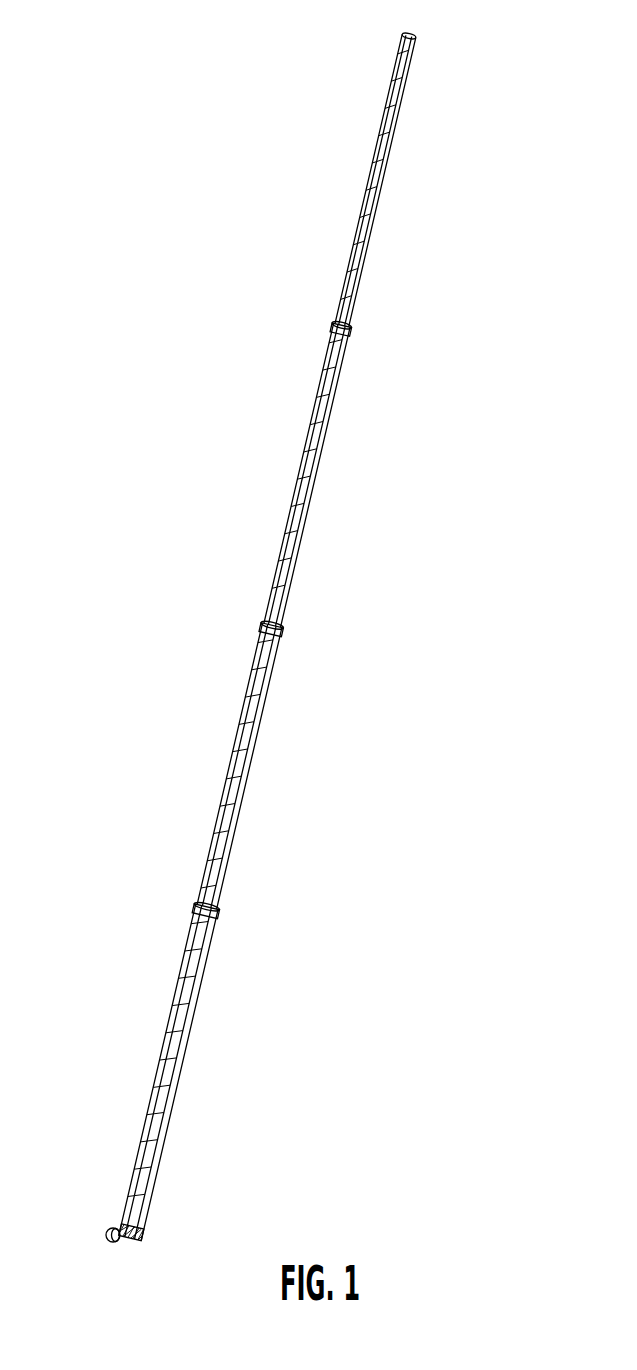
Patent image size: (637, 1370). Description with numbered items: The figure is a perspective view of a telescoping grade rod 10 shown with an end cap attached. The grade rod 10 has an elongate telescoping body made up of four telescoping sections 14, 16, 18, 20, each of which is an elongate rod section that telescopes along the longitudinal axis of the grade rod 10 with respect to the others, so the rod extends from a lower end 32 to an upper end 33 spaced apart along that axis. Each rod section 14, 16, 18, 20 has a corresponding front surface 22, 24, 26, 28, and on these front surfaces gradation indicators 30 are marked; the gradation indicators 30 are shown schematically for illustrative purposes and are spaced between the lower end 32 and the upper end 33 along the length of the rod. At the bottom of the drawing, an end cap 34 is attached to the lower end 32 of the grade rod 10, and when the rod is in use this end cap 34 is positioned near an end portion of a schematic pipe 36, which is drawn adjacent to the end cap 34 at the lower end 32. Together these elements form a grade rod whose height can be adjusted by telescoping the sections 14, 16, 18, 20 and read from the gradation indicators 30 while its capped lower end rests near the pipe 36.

The telescoping grade rod 10 is at (280, 142).
The telescoping section 14 is at (166, 1109).
The telescoping section 16 is at (243, 764).
The telescoping section 18 is at (318, 473).
The telescoping section 20 is at (385, 163).
The front surface 22 is at (172, 1028).
The front surface 24 is at (228, 806).
The front surface 26 is at (298, 486).
The front surface 28 is at (348, 283).
The gradation indicators 30 is at (378, 152).
The lower end 32 is at (184, 1256).
The upper end 33 is at (421, 30).
The end cap 34 is at (134, 1248).
The schematic pipe 36 is at (107, 1233).